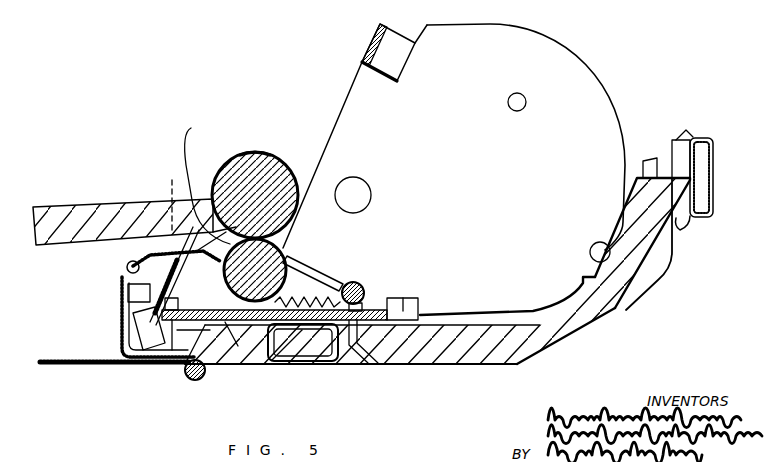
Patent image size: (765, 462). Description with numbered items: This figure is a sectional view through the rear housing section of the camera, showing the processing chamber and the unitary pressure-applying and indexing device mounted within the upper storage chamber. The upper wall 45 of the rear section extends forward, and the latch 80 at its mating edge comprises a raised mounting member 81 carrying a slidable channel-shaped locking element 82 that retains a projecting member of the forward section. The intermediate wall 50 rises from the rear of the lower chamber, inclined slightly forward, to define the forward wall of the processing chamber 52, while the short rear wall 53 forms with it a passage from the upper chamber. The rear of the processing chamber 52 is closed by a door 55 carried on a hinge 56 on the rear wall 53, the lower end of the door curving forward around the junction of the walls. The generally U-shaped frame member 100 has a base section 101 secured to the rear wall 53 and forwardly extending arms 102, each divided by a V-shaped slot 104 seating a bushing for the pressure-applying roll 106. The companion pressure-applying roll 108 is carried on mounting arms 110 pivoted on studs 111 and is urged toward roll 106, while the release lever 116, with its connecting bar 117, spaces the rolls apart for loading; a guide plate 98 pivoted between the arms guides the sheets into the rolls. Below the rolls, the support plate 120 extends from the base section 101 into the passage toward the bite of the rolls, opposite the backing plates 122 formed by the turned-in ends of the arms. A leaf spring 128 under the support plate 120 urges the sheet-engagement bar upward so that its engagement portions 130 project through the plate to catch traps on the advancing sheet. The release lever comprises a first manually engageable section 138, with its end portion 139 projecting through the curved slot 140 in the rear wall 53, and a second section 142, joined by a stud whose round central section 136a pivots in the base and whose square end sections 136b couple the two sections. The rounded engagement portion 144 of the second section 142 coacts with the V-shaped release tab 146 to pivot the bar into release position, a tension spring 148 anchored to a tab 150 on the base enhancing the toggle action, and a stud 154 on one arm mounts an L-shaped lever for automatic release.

The upper wall 45 is at (673, 248).
The intermediate wall 50 is at (60, 207).
The processing chamber 52 is at (58, 318).
The rear wall 53 is at (497, 366).
The door 55 is at (55, 367).
The hinge 56 is at (196, 381).
The latch 80 is at (715, 178).
The mounting member 81 is at (688, 198).
The locking element 82 is at (704, 150).
The guide plate 98 is at (330, 270).
The frame member 100 is at (557, 40).
The base section 101 is at (432, 366).
The arms 102 is at (515, 183).
The V-shaped slot 104 is at (300, 215).
The pressure-applying roll 106 is at (279, 253).
The pressure-applying roll 108 is at (268, 150).
The mounting arms 110 is at (323, 150).
The stud 111 is at (371, 190).
The release lever 116 is at (399, 34).
The connecting bar 117 is at (372, 36).
The support plate 120 is at (147, 254).
The backing plates 122 is at (172, 180).
The leaf spring 128 is at (125, 295).
The engagement portions 130 is at (207, 186).
The central section 136a is at (228, 355).
The end sections 136b is at (210, 300).
The first manually engageable section 138 is at (288, 364).
The end portion 139 is at (342, 358).
The curved slot 140 is at (360, 340).
The second section 142 is at (123, 280).
The engagement portion 144 is at (158, 367).
The release tab 146 is at (124, 337).
The tension spring 148 is at (288, 302).
The tab 150 is at (398, 298).
The stud 154 is at (366, 285).